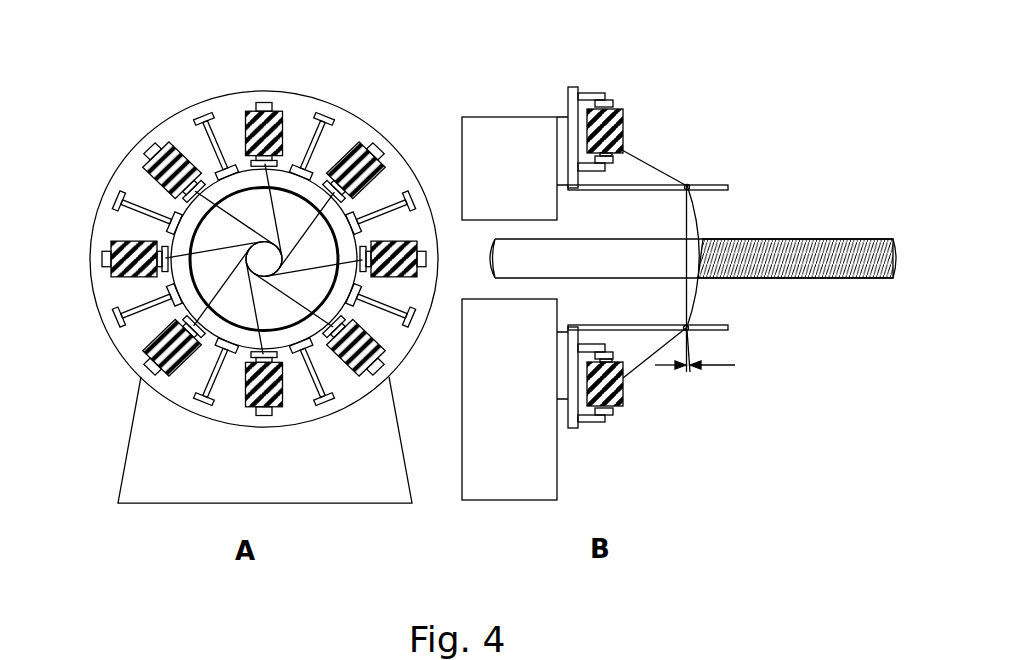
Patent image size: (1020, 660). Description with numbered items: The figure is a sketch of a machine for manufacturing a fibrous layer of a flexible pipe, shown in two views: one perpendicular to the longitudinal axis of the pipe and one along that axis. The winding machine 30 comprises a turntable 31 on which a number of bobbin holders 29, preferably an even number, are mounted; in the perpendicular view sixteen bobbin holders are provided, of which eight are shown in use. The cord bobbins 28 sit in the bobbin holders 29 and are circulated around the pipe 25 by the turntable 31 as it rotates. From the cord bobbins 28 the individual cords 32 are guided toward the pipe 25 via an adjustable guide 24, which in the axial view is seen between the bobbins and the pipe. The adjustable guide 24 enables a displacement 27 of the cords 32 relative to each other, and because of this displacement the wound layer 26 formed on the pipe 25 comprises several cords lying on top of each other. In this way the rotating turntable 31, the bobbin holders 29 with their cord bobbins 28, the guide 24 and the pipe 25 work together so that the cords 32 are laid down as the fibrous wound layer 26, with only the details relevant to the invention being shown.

In FIG. 4A, the adjustable guide 24 is at (269, 190).
In FIG. 4B, the adjustable guide 24 is at (690, 183).
In FIG. 4A, the pipe 25 is at (184, 180).
In FIG. 4B, the pipe 25 is at (665, 250).
In FIG. 4A, the wound layer 26 is at (201, 180).
In FIG. 4B, the wound layer 26 is at (813, 239).
In FIG. 4B, the displacement 27 is at (702, 361).
In FIG. 4A, the cord bobbins 28 is at (264, 223).
In FIG. 4B, the cord bobbins 28 is at (623, 120).
In FIG. 4A, the bobbin holders 29 is at (264, 226).
In FIG. 4B, the bobbin holders 29 is at (597, 93).
In FIG. 4A, the winding machine 30 is at (230, 435).
In FIG. 4B, the winding machine 30 is at (530, 117).
In FIG. 4A, the turntable 31 is at (237, 259).
In FIG. 4B, the turntable 31 is at (572, 87).
In FIG. 4A, the cords 32 is at (290, 210).
In FIG. 4B, the cords 32 is at (652, 162).